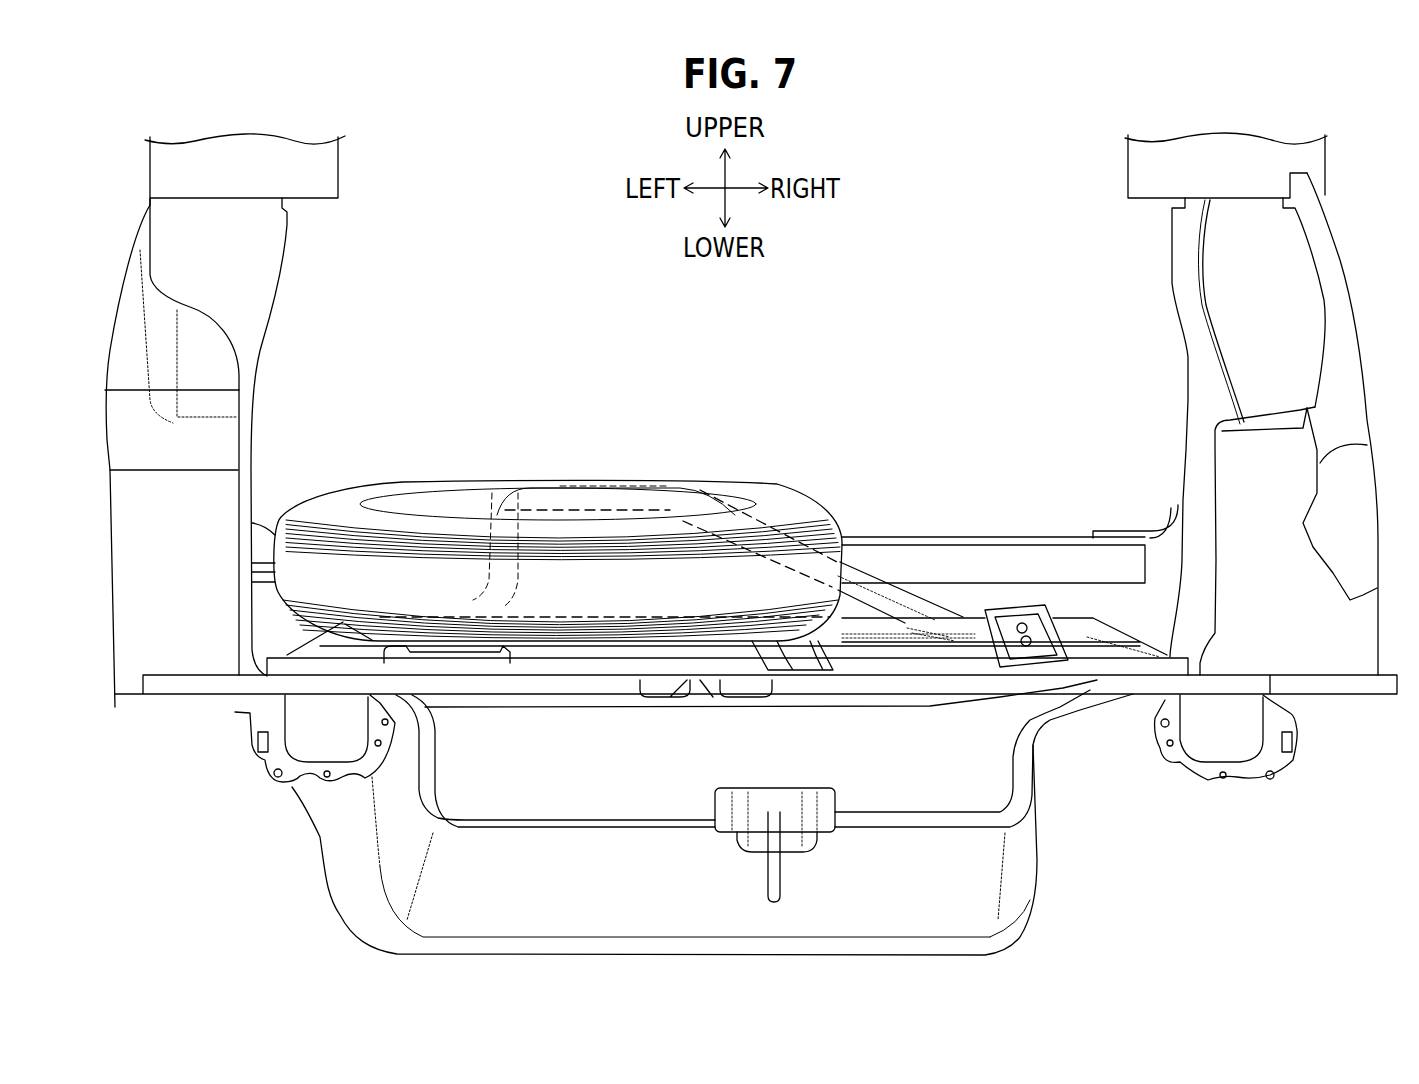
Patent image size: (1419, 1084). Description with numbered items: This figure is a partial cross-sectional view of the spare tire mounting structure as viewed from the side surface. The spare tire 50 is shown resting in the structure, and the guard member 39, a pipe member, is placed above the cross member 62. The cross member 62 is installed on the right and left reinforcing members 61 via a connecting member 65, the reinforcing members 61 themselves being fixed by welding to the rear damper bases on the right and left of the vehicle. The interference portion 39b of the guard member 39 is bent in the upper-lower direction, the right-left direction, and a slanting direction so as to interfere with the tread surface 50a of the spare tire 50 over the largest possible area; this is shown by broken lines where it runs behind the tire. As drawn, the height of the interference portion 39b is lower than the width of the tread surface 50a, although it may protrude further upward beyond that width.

The spare tire 50 is at (463, 482).
The tread surface 50a is at (370, 577).
The guard member 39 is at (858, 585).
The interference portion 39b is at (790, 493).
The cross member 62 is at (968, 540).
The connecting member 65 is at (1152, 530).
The reinforcing member 61 is at (1200, 403).